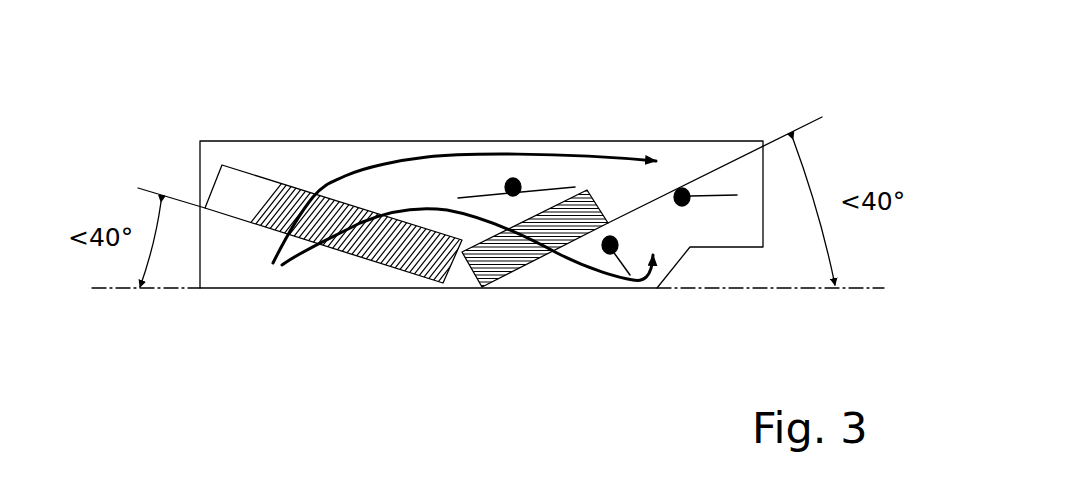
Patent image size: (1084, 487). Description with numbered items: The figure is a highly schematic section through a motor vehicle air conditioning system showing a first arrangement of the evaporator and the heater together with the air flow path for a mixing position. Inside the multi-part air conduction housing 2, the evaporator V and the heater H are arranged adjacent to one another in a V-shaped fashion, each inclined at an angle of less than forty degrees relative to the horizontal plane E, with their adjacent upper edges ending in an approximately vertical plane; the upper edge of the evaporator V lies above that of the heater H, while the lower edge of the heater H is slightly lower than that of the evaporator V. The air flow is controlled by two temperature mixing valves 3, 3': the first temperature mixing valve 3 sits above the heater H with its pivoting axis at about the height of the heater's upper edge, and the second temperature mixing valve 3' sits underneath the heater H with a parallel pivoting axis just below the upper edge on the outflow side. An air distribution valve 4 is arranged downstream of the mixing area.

The air conduction housing 2 is at (287, 140).
The first temperature mixing valve 3 is at (516, 135).
The second temperature mixing valve 3' is at (626, 156).
The air distribution valve 4 is at (682, 197).
The evaporator V is at (360, 247).
The heater H is at (487, 268).
The horizontal plane E is at (698, 288).